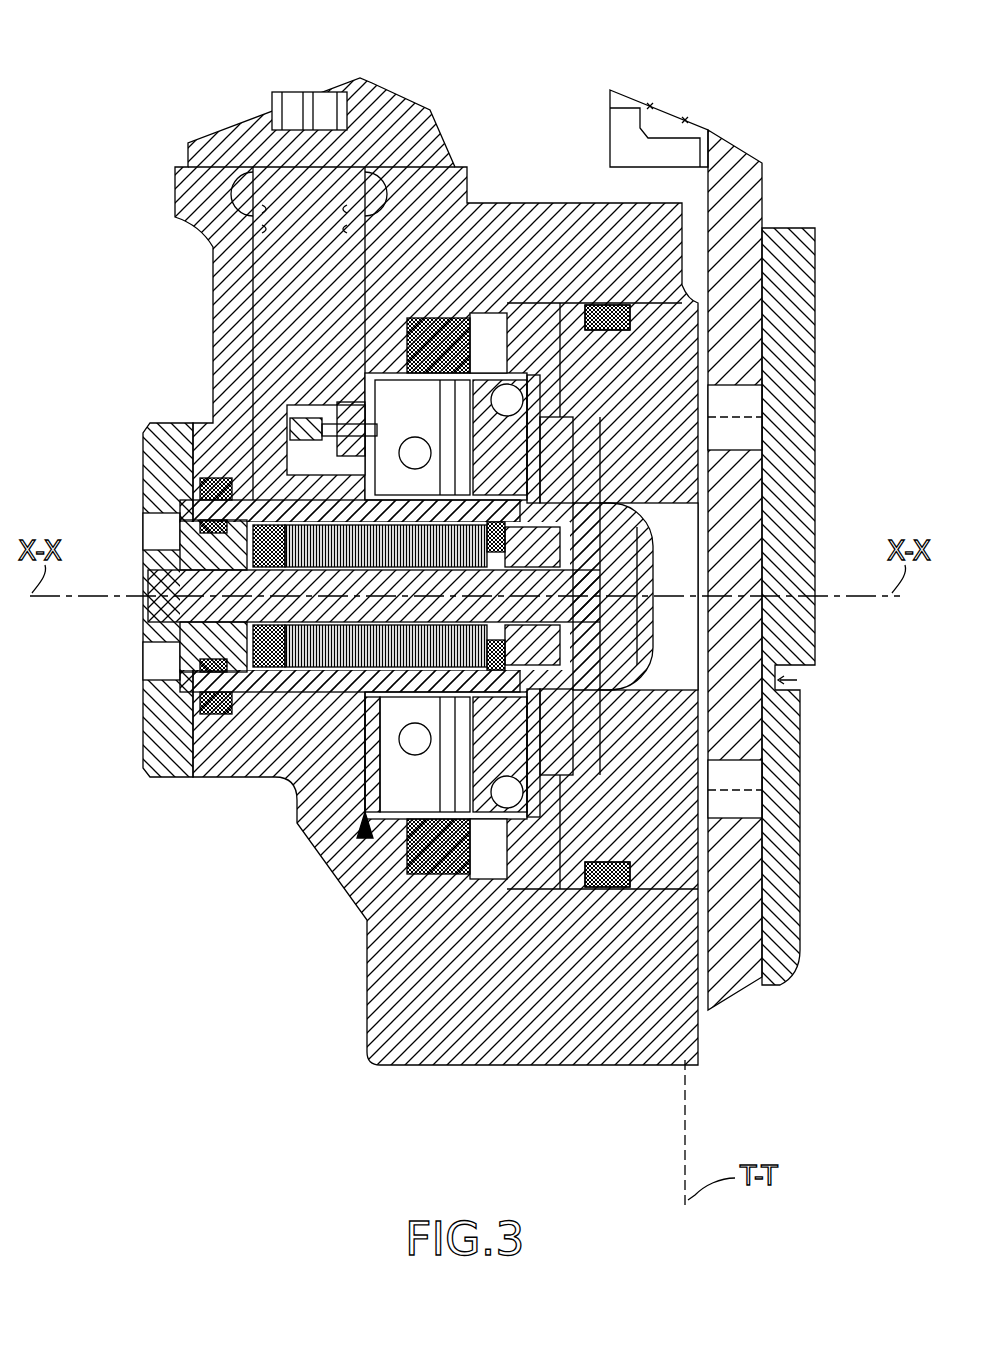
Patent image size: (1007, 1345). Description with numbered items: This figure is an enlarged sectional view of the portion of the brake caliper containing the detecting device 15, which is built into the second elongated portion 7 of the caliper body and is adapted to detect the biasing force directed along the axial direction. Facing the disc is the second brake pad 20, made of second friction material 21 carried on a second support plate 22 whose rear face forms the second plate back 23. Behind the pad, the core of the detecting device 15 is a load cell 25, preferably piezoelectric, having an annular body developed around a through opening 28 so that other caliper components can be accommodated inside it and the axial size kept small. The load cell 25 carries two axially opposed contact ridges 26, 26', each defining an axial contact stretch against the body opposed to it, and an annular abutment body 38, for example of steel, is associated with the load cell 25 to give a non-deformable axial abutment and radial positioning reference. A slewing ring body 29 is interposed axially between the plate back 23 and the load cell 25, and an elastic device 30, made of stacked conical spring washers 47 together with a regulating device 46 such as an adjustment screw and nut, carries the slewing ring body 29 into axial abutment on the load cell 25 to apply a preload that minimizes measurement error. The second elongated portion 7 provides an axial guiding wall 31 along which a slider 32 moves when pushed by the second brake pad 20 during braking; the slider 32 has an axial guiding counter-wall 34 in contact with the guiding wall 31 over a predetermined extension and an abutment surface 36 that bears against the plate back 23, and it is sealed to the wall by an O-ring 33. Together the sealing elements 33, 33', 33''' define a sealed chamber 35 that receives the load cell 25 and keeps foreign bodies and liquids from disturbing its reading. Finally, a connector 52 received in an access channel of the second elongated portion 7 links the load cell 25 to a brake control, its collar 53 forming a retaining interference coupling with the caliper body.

The second elongated portion 7 is at (402, 1058).
The detecting device 15 is at (305, 905).
The second brake pad 20 is at (750, 128).
The second friction material 21 is at (798, 290).
The second support plate 22 is at (748, 205).
The second plate back 23 is at (706, 290).
The load cell 25 is at (460, 265).
The contact ridge 26 is at (470, 639).
The contact ridge 26' is at (298, 556).
The through opening 28 is at (298, 438).
The slewing ring body 29 is at (600, 475).
The elastic device 30 is at (190, 650).
The axial guiding wall 31 is at (590, 303).
The slider 32 is at (660, 700).
The O-ring 33 is at (742, 619).
The sealing element 33' is at (136, 632).
The sealing element 33''' is at (264, 113).
The axial guiding counter-wall 34 is at (552, 318).
The sealed chamber 35 is at (490, 880).
The abutment surface 36 is at (700, 488).
The annular abutment body 38 is at (435, 325).
The regulating device 46 is at (150, 565).
The conical spring washers 47 is at (215, 718).
The connector 52 is at (268, 92).
The collar 53 is at (247, 247).